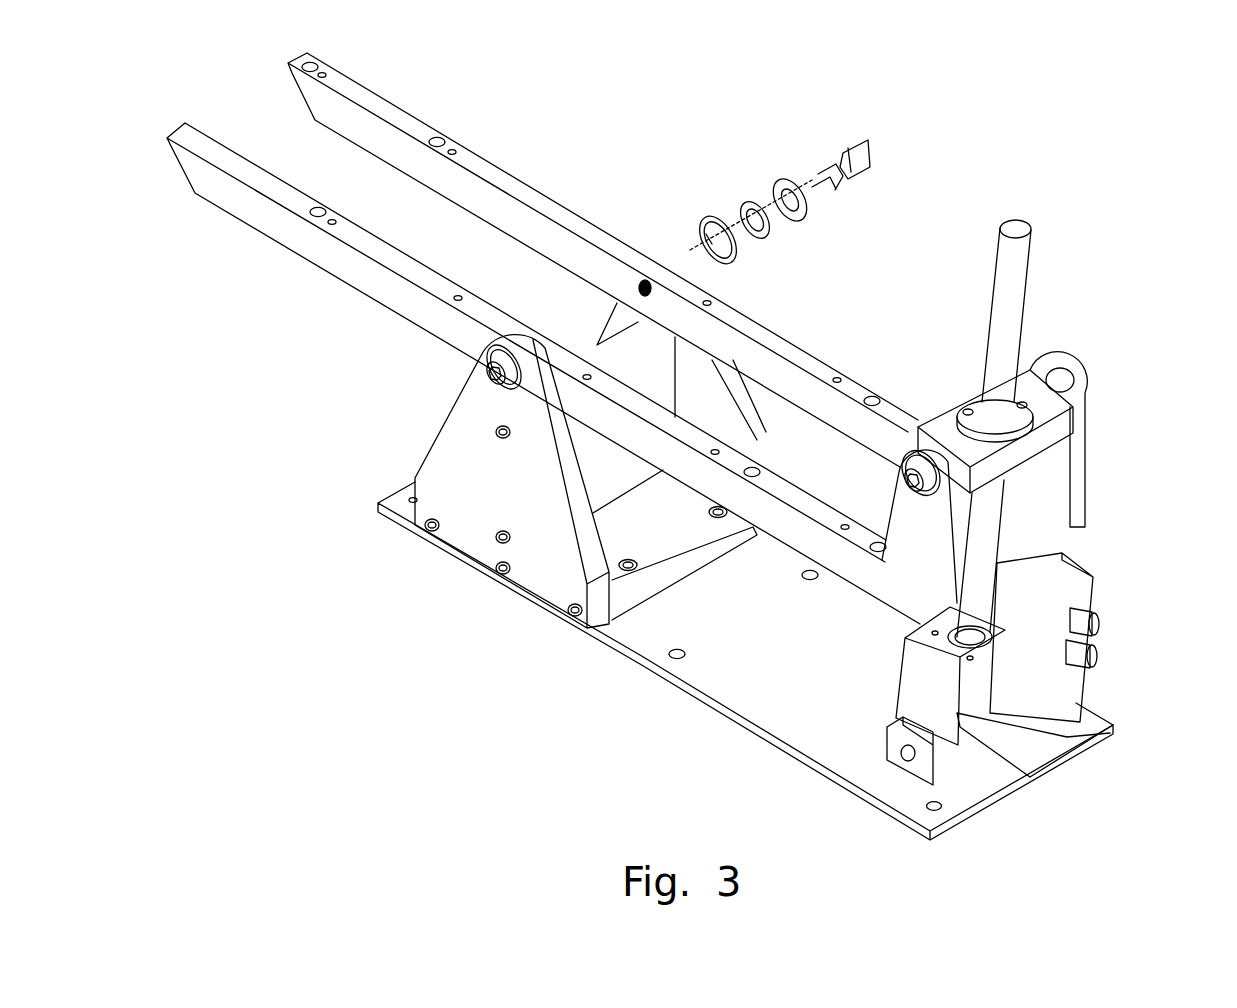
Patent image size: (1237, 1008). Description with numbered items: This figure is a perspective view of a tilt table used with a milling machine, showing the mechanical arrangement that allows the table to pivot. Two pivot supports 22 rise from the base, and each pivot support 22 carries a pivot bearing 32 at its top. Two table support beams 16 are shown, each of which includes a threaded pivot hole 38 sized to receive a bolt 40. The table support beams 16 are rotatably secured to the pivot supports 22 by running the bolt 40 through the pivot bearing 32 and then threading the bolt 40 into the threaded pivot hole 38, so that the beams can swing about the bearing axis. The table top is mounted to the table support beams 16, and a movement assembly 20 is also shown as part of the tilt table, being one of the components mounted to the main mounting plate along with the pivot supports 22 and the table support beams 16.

The movement assembly 20 is at (1152, 540).
The table support beams 16 is at (485, 168).
The pivot supports 22 is at (438, 458).
The pivot bearing 32 is at (752, 198).
The threaded pivot hole 38 is at (645, 279).
The bolt 40 is at (867, 165).